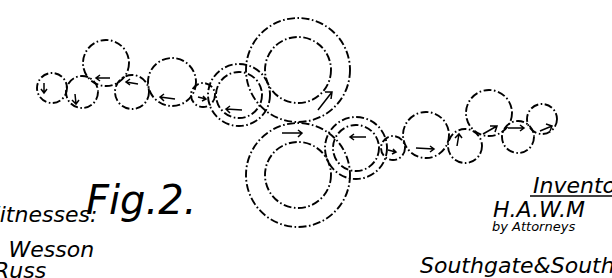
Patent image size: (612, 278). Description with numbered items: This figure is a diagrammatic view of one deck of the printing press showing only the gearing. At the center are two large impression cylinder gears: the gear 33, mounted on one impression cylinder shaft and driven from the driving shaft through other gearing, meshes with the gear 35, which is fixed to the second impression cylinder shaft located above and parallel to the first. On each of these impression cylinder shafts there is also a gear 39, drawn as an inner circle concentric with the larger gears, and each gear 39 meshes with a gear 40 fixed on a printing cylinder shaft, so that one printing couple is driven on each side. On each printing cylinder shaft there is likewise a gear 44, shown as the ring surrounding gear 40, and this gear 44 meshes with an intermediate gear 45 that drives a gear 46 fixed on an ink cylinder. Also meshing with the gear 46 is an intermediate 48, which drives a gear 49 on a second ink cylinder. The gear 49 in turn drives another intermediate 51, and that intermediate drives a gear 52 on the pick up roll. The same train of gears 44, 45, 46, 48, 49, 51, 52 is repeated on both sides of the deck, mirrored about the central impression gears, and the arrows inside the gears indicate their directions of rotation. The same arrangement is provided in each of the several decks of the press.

The gear 33 is at (256, 197).
The gear 35 is at (354, 62).
The gear 39 is at (318, 43).
The gear 40 is at (247, 66).
The gear 44 is at (236, 125).
The intermediate gear 45 is at (200, 106).
The gear 46 is at (190, 55).
The intermediate gear 48 is at (125, 108).
The gear 49 is at (125, 40).
The intermediate gear 51 is at (77, 107).
The gear 52 is at (42, 77).